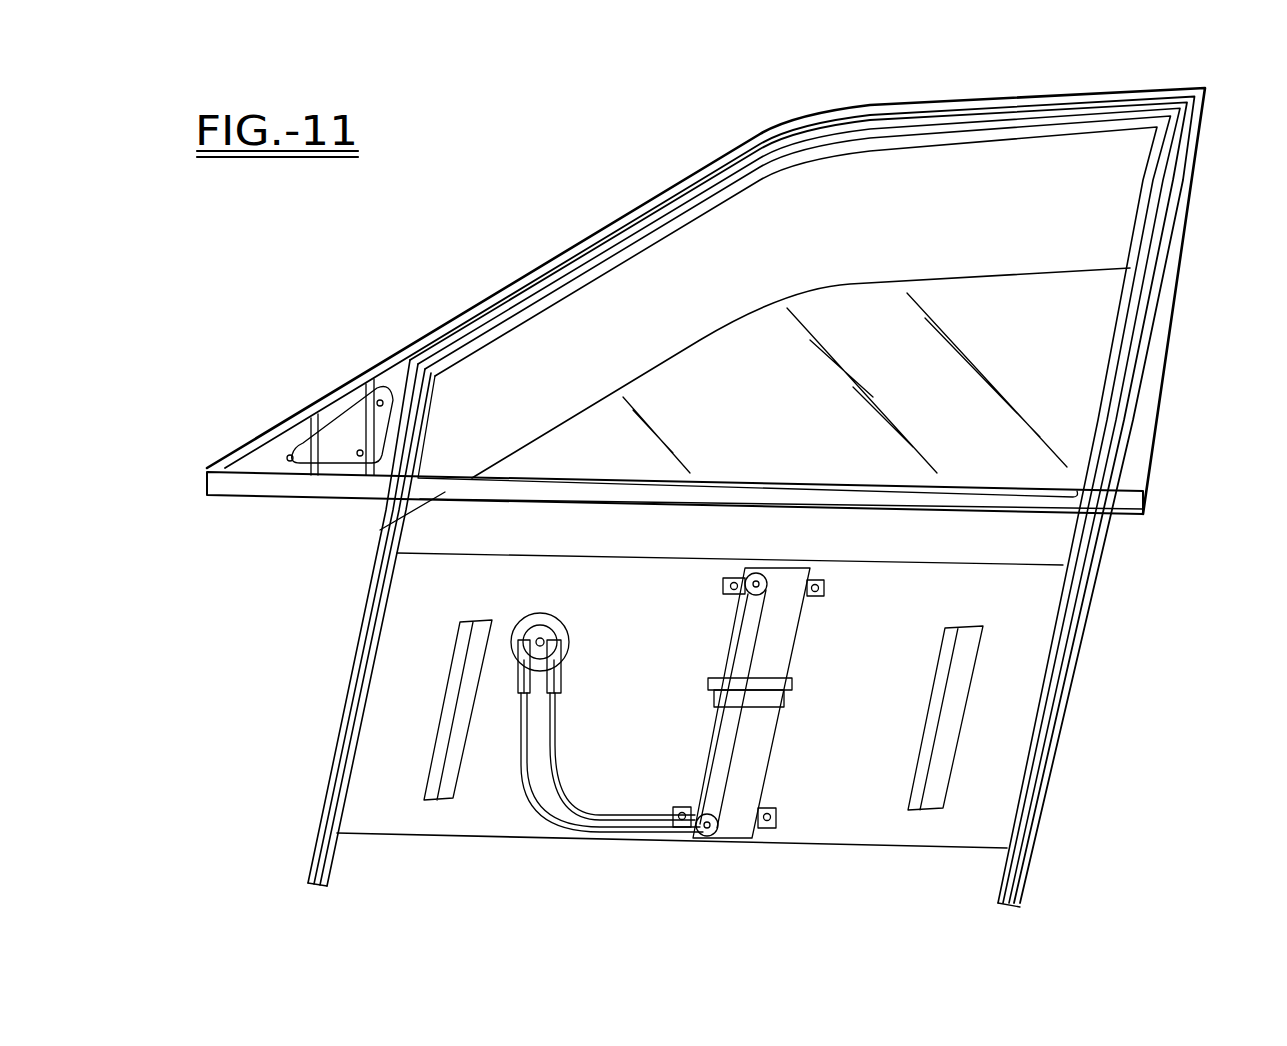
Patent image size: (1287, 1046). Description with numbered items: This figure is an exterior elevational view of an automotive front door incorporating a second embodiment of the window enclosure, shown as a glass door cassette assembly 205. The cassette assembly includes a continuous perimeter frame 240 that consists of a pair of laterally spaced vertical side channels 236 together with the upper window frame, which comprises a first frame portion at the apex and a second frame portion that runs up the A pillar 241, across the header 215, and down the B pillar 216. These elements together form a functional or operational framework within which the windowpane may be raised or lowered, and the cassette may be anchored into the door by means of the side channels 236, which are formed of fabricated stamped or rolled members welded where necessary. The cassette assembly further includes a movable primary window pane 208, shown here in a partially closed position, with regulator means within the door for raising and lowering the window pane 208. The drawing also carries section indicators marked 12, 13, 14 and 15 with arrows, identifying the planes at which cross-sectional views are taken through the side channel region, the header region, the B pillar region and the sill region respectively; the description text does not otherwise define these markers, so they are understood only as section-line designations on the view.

The glass door cassette assembly 205 is at (405, 347).
The primary window pane 208 is at (537, 836).
The header 215 is at (1080, 96).
The B pillar 216 is at (1174, 226).
The vertical side channels 236 is at (352, 680).
The continuous perimeter frame 240 is at (598, 240).
The A pillar 241 is at (656, 195).
The section line 12- 12 is at (515, 438).
The section line 13- 13 is at (915, 181).
The section line 14- 14 is at (1270, 390).
The section line 15- 15 is at (700, 540).